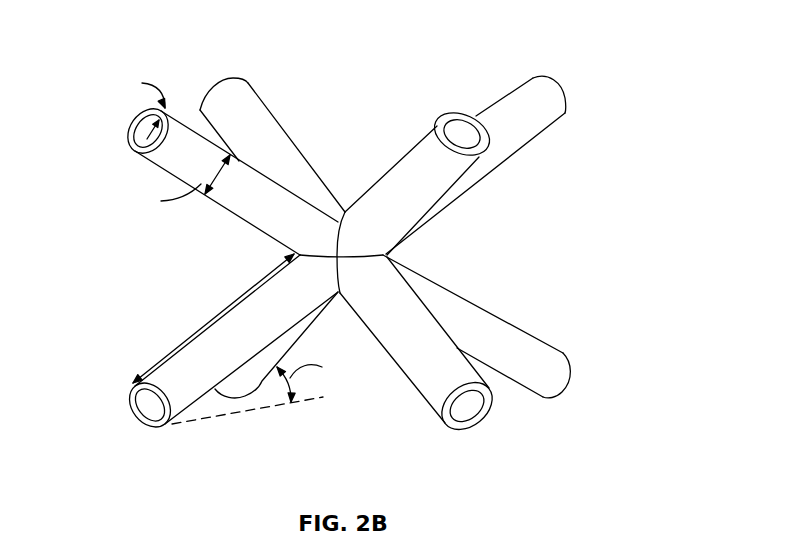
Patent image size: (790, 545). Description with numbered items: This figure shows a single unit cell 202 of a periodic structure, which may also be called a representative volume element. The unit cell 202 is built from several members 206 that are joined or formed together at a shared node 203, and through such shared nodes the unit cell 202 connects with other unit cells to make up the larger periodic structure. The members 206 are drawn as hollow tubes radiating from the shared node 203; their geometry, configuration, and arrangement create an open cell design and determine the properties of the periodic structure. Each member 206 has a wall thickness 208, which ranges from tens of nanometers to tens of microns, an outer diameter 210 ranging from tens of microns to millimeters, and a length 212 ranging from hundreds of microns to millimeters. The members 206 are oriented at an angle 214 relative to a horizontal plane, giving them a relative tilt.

The unit cell 202 is at (592, 83).
The shared node 203 is at (368, 218).
The member 206 is at (535, 340).
The wall thickness t 208 is at (129, 131).
The outer diameter 210 is at (257, 229).
The length 212 is at (195, 328).
The angle θ 214 is at (354, 378).